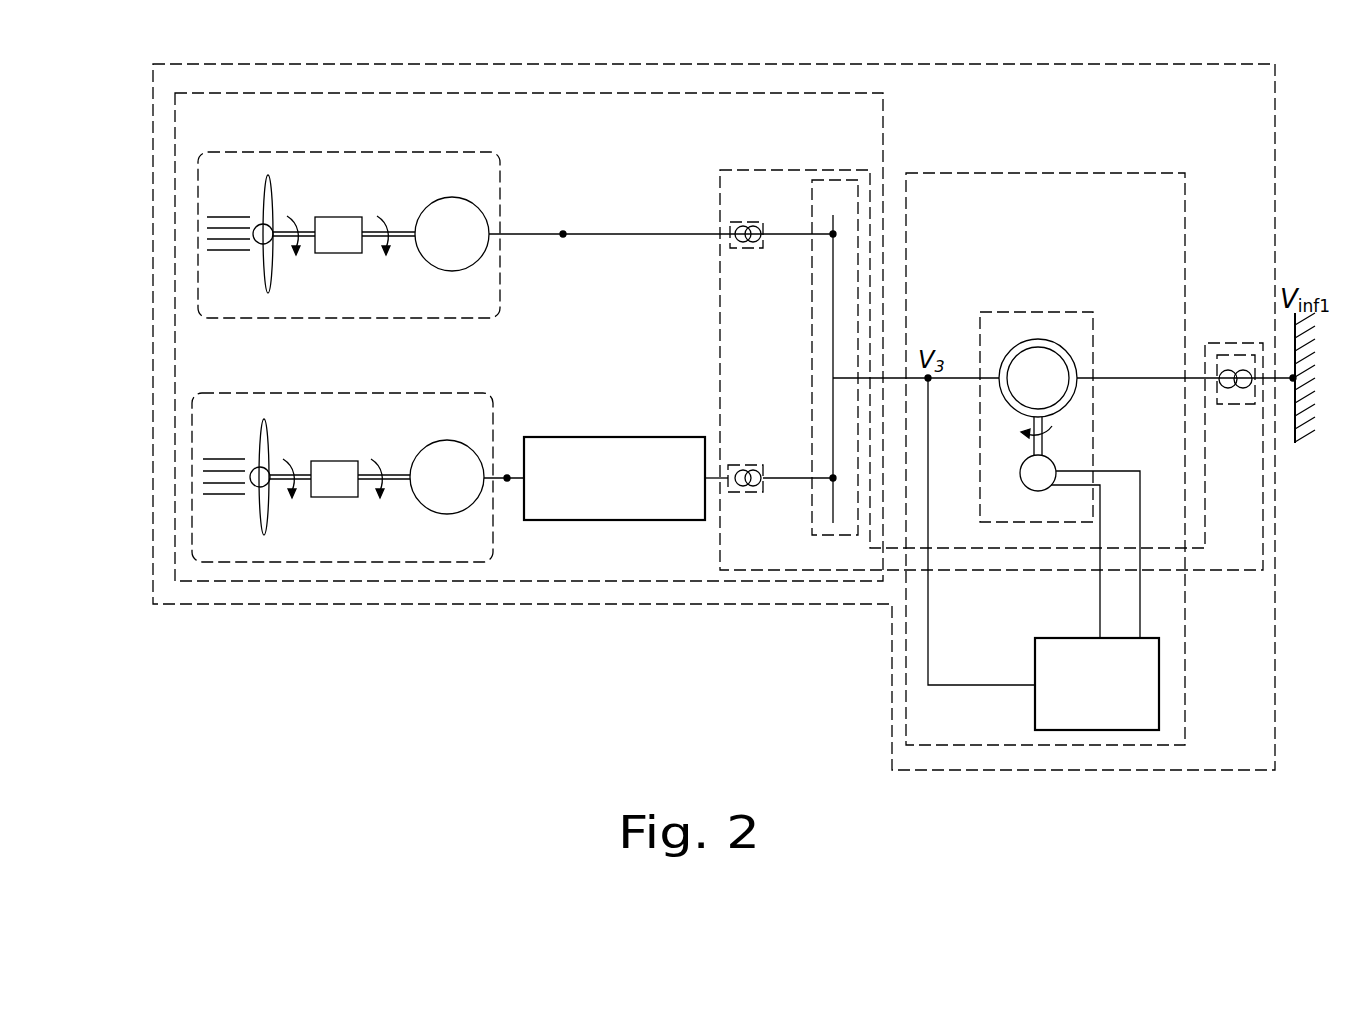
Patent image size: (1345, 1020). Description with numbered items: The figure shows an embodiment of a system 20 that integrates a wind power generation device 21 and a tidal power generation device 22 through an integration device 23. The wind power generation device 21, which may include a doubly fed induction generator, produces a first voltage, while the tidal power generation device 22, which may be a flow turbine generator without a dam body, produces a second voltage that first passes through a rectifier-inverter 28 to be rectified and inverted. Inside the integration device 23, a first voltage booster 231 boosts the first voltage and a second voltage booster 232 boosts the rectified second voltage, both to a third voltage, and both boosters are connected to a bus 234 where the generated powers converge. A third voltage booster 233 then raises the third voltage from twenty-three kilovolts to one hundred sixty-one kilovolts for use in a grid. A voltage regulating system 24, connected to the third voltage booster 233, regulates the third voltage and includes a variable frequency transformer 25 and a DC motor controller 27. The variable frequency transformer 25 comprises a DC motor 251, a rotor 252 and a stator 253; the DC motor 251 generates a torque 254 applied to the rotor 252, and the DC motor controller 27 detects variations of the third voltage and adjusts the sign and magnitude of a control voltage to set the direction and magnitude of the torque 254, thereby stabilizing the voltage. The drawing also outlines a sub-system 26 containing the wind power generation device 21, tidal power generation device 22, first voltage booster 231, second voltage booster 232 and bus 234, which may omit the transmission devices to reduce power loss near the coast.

The system 20 is at (350, 605).
The wind power generation device 21 is at (198, 195).
The tidal power generation device 22 is at (192, 428).
The integration device 23 is at (773, 170).
The first voltage booster 231 is at (757, 222).
The second voltage booster 232 is at (752, 465).
The third voltage booster 233 is at (1232, 405).
The bus 234 is at (812, 300).
The voltage regulating system 24 is at (985, 172).
The variable frequency transformer 25 is at (1059, 422).
The DC motor 251 is at (1030, 490).
The rotor 252 is at (1010, 400).
The stator 253 is at (1068, 362).
The torque 254 is at (1045, 427).
The sub-system 26 is at (200, 93).
The DC motor controller 27 is at (1159, 688).
The rectifier-inverter 28 is at (570, 520).